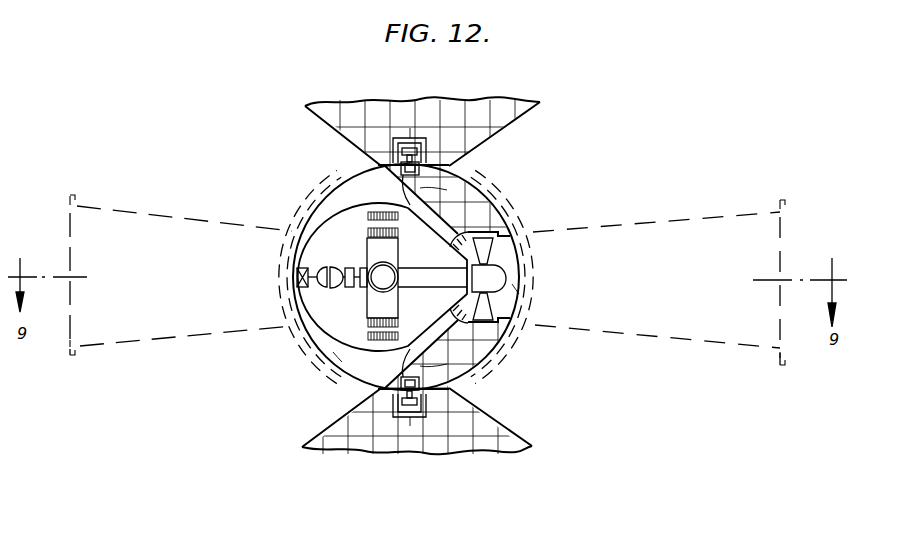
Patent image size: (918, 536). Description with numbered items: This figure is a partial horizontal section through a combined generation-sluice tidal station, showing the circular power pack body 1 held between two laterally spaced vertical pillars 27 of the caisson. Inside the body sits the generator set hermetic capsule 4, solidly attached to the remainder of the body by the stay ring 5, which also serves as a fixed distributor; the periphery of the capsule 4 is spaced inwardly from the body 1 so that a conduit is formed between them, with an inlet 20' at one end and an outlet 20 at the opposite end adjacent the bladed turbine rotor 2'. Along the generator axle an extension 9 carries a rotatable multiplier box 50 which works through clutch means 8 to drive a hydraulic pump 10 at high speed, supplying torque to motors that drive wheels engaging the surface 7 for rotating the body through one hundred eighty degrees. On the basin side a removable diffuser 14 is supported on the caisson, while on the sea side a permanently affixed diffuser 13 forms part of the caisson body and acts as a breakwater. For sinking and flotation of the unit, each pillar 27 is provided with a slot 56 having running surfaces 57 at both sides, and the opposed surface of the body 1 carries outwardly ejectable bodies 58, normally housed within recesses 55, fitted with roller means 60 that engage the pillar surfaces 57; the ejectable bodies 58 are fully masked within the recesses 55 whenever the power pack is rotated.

The power pack body 1 is at (503, 214).
The turbine rotor 2' is at (478, 277).
The generator set hermetic capsule 4 is at (328, 332).
The stay ring 5 is at (432, 229).
The surface 7 is at (326, 182).
The clutch means 8 is at (336, 290).
The axle extension 9 is at (318, 270).
The hydraulic pump 10 is at (297, 280).
The permanently affixed diffuser 13 is at (661, 283).
The removable diffuser 14 is at (151, 283).
The outlet 20 is at (546, 295).
The inlet 20' is at (314, 382).
The vertical pillar 27 is at (507, 117).
The rotatable multiplier box 50 is at (350, 267).
The recess 55 is at (396, 175).
The slot 56 is at (410, 146).
The running surface 57 is at (431, 150).
The ejectable body 58 is at (424, 180).
The roller means 60 is at (413, 148).